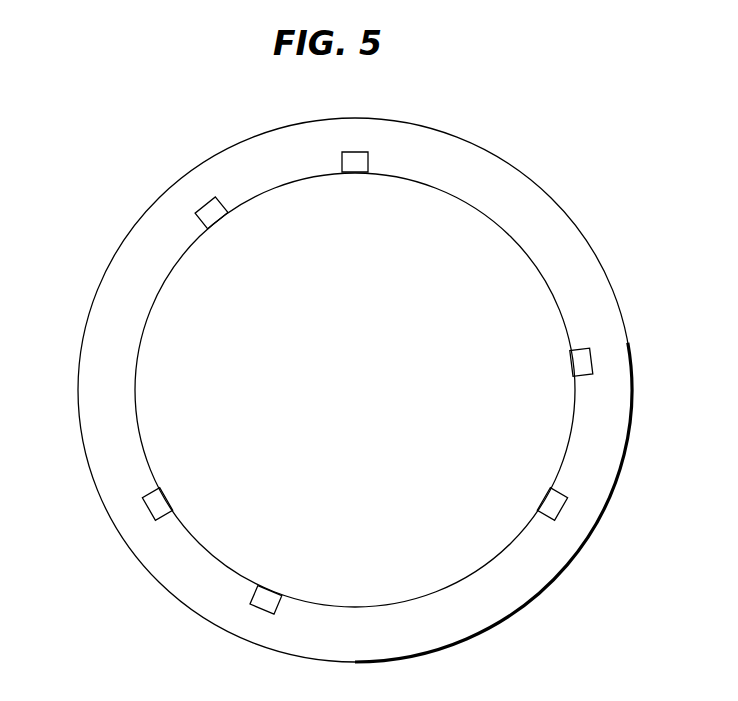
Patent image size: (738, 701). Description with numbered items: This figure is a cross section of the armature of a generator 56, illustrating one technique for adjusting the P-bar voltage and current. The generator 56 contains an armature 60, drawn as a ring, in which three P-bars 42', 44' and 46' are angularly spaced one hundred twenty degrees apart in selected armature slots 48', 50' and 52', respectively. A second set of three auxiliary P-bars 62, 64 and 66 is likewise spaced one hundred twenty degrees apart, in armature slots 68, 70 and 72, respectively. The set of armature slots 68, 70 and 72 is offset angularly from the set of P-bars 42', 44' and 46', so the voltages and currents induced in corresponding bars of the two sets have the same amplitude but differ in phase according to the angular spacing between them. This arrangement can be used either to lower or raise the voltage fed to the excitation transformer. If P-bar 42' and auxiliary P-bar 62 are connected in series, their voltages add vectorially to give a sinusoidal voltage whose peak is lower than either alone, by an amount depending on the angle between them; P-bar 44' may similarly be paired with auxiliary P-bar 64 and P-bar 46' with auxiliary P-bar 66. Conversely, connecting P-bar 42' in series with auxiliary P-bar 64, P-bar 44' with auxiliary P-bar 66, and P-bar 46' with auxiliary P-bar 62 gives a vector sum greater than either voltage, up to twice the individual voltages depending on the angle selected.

The generator 56 is at (660, 224).
The armature 60 is at (538, 198).
The P-bar 42' is at (361, 194).
The P-bar 44' is at (192, 484).
The P-bar 46' is at (525, 497).
The armature slot 48' is at (404, 167).
The armature slot 50' is at (192, 467).
The armature slot 52' is at (525, 474).
The auxiliary P-bar 62 is at (222, 220).
The auxiliary P-bar 64 is at (268, 594).
The auxiliary P-bar 66 is at (572, 362).
The armature slot 68 is at (205, 205).
The armature slot 70 is at (252, 595).
The armature slot 72 is at (584, 346).